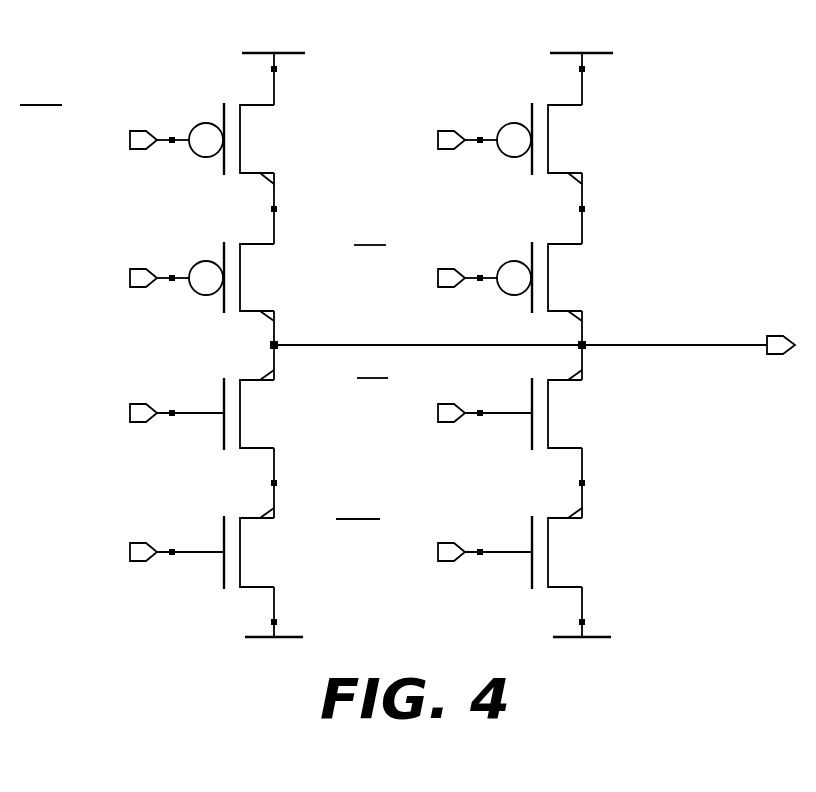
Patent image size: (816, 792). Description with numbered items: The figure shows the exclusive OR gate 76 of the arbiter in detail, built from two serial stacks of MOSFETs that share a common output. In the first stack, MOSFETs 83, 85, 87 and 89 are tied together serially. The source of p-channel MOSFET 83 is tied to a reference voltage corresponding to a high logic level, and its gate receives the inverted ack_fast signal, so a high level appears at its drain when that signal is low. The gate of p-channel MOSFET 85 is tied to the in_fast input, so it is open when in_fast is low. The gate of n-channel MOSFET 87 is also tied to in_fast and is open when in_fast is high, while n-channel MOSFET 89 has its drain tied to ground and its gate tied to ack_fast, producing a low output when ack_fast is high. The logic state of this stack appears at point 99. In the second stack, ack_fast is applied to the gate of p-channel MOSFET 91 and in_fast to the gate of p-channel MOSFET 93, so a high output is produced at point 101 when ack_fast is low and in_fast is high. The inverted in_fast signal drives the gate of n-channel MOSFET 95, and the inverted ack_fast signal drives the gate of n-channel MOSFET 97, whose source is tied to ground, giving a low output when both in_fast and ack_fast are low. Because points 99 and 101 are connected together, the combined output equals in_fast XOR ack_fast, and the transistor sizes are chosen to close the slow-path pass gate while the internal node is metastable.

The fast arbiter logic circuit 76 is at (412, 346).
The p-channel MOSFET 83 is at (240, 140).
The p-channel MOSFET 85 is at (240, 278).
The n-channel MOSFET 87 is at (240, 413).
The n-channel MOSFET 89 is at (240, 552).
The p-channel MOSFET 91 is at (548, 140).
The p-channel MOSFET 93 is at (548, 278).
The n-channel MOSFET 95 is at (548, 413).
The n-channel MOSFET 97 is at (548, 552).
The point 99 is at (274, 345).
The point 101 is at (582, 344).